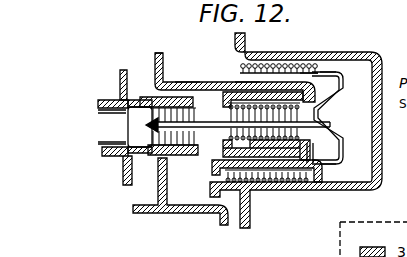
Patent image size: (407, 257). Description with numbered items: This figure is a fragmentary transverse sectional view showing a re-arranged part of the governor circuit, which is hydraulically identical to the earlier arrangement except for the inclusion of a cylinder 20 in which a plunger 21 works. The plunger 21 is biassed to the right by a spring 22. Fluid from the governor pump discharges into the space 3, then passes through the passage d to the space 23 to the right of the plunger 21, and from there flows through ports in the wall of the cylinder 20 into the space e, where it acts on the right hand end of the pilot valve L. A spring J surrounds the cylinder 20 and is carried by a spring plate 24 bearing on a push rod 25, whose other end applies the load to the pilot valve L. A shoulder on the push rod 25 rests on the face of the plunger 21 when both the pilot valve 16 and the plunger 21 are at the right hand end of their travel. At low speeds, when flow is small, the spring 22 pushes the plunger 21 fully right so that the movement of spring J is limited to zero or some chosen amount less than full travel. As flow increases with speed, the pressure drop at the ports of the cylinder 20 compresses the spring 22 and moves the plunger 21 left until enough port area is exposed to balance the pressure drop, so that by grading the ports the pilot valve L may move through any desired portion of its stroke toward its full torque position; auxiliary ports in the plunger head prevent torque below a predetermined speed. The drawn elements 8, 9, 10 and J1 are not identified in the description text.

The space 3 is at (289, 130).
The inlet pipe 8 is at (157, 68).
The wall 9 is at (125, 82).
The passage 10 is at (170, 52).
The pilot valve 16 is at (122, 98).
The cylinder 20 is at (240, 95).
The plunger 21 is at (322, 106).
The spring 22 is at (343, 143).
The space 23 is at (334, 119).
The spring plate 24 is at (341, 83).
The push rod 25 is at (251, 171).
The plate J1 is at (188, 96).
The spring J is at (313, 60).
The passage d is at (302, 60).
The space e is at (253, 99).
The pilot valve L is at (125, 126).